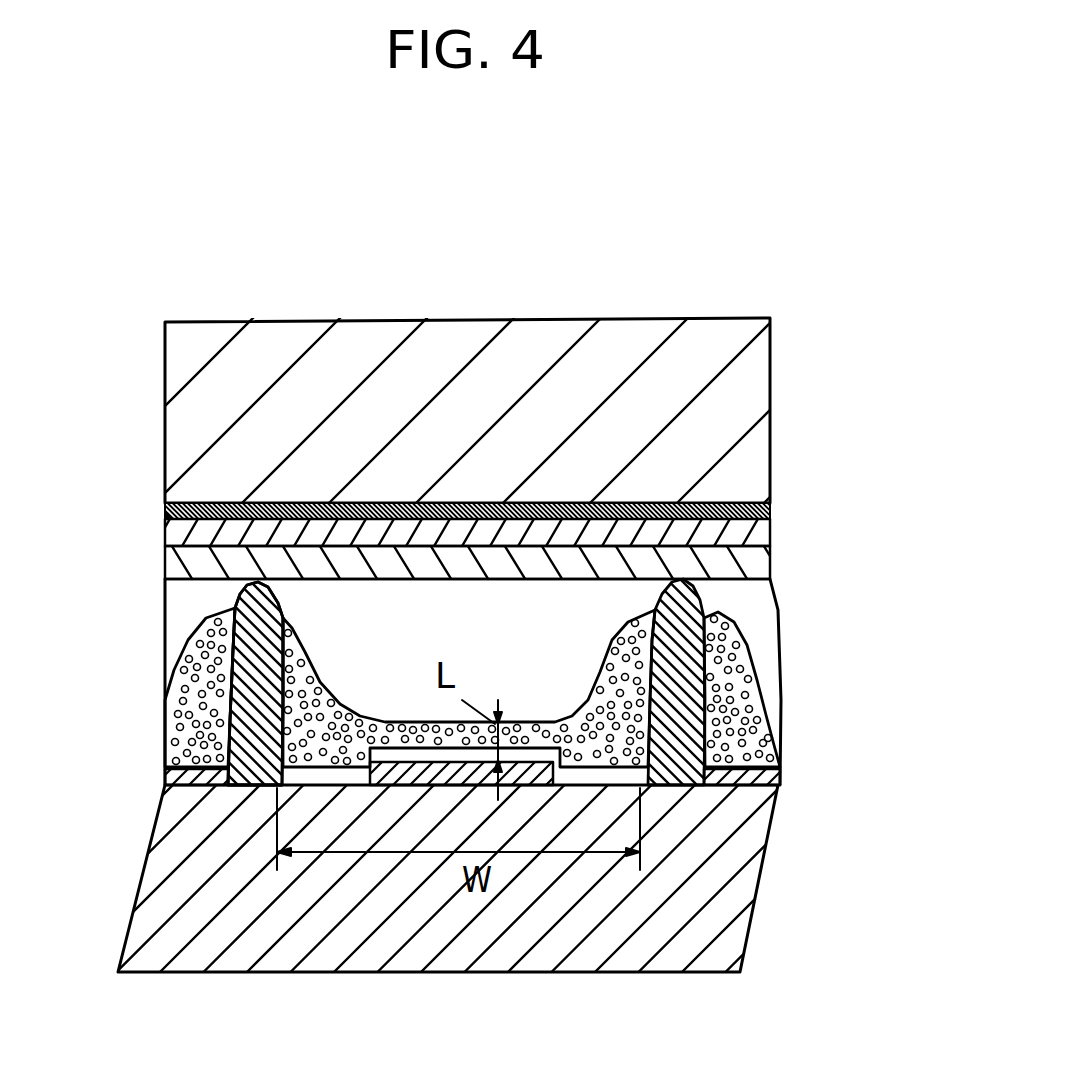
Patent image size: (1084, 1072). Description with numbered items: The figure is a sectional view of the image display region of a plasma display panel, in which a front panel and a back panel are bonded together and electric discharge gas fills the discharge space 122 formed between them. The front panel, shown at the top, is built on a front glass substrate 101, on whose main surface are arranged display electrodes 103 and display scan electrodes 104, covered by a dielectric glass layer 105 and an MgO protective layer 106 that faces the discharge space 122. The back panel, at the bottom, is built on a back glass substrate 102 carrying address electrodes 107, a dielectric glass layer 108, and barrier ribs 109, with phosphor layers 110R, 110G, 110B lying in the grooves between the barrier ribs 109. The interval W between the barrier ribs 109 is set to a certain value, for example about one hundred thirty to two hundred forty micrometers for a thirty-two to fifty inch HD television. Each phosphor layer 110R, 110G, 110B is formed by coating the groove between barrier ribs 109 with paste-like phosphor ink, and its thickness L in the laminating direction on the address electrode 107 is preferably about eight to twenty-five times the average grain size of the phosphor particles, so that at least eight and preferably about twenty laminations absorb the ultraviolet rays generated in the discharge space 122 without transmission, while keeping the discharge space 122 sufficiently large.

The front glass substrate 101 is at (760, 398).
The back glass substrate 102 is at (743, 872).
The display electrodes 103 is at (770, 509).
The display scan electrodes 104 is at (770, 509).
The dielectric glass layer 105 is at (772, 538).
The MgO protective layer 106 is at (773, 567).
The address electrodes 107 is at (365, 786).
The dielectric glass layer 108 is at (285, 716).
The barrier ribs 109 is at (667, 592).
The red phosphor layer 110R is at (175, 698).
The green phosphor layer 110G is at (598, 758).
The blue phosphor layer 110B is at (760, 730).
The discharge space 122 is at (588, 642).